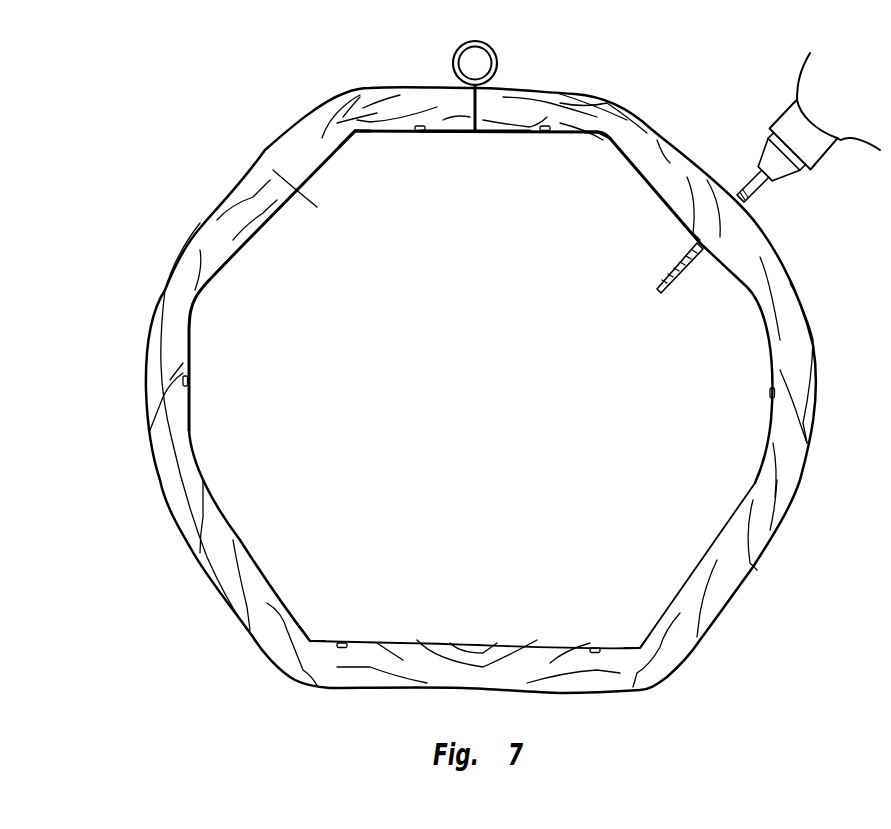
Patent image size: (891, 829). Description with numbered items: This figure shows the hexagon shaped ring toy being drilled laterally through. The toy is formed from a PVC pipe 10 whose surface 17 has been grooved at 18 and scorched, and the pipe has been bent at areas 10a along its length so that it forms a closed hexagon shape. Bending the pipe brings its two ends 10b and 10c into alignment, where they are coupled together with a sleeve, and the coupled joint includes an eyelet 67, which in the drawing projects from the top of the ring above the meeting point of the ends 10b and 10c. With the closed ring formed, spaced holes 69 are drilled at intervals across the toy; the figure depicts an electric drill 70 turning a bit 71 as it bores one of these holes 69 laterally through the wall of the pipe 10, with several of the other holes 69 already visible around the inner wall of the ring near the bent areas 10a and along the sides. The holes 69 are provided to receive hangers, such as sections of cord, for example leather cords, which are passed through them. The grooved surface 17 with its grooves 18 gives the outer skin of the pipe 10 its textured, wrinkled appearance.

The PVC pipe 10 is at (218, 172).
The bent areas 10a is at (352, 142).
The pipe end 10b is at (470, 100).
The pipe end 10c is at (487, 112).
The pipe surface 17 is at (178, 349).
The grooving 18 is at (182, 516).
The eyelet 67 is at (494, 48).
The spaced holes 69 is at (420, 132).
The electric drill 70 is at (853, 116).
The bit 71 is at (660, 293).